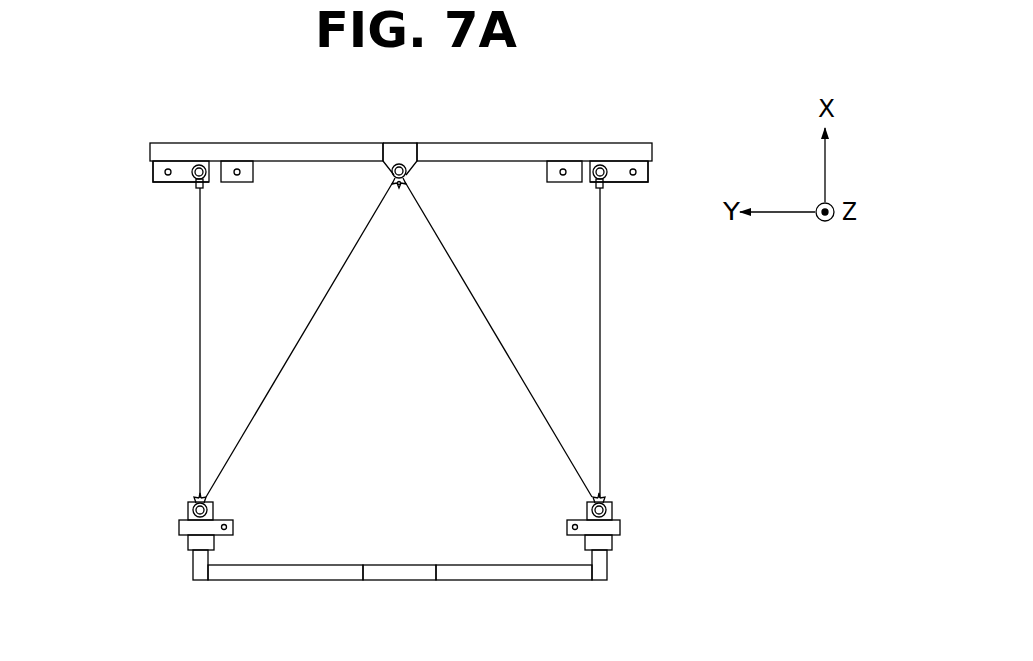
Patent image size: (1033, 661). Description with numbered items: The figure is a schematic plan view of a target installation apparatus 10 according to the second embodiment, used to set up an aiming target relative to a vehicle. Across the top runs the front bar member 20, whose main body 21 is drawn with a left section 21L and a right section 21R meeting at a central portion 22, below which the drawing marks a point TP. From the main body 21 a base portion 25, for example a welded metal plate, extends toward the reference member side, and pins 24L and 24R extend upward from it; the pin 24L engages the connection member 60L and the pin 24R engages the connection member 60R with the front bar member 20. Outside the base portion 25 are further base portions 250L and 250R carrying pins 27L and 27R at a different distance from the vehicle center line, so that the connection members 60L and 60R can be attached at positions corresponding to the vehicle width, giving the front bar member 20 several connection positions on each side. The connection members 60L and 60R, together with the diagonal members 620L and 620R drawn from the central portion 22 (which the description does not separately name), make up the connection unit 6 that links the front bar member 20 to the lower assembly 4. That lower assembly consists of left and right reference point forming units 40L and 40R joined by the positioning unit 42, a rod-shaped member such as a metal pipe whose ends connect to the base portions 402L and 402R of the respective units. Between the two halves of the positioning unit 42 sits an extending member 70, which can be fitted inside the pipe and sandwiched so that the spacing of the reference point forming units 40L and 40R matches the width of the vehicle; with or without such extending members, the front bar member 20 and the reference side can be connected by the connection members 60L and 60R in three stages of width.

The target installation apparatus 10 is at (192, 127).
The front bar member 20 is at (647, 137).
The main body 21 is at (527, 138).
The left beam portion 21L is at (315, 143).
The right beam portion 21R is at (455, 143).
The center bracket 22 is at (398, 143).
The pin 24L is at (255, 173).
The pin 24R is at (565, 185).
The base portion 25 is at (250, 183).
The pin 27L is at (152, 173).
The pin 27R is at (647, 168).
The base portion 250L is at (153, 180).
The base portion 250R is at (648, 185).
The top point TP is at (399, 186).
The connection unit 6 is at (158, 398).
The connection member 60L is at (200, 322).
The connection member 60R is at (600, 352).
The left diagonal wire 620L is at (272, 387).
The right diagonal wire 620R is at (513, 373).
The lower unit 4 is at (700, 513).
The reference point forming unit 40L is at (160, 537).
The reference point forming unit 40R is at (643, 528).
The positioning unit 42 is at (552, 590).
The base portion 402L is at (278, 565).
The base portion 402R is at (497, 565).
The extending member 70 is at (407, 565).